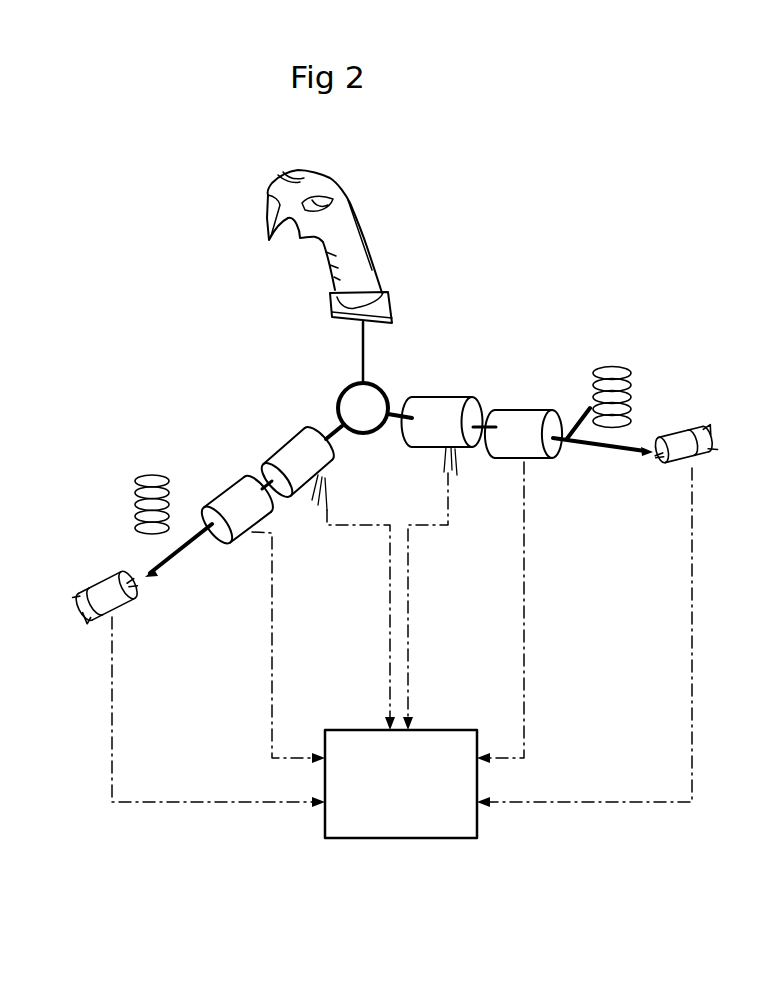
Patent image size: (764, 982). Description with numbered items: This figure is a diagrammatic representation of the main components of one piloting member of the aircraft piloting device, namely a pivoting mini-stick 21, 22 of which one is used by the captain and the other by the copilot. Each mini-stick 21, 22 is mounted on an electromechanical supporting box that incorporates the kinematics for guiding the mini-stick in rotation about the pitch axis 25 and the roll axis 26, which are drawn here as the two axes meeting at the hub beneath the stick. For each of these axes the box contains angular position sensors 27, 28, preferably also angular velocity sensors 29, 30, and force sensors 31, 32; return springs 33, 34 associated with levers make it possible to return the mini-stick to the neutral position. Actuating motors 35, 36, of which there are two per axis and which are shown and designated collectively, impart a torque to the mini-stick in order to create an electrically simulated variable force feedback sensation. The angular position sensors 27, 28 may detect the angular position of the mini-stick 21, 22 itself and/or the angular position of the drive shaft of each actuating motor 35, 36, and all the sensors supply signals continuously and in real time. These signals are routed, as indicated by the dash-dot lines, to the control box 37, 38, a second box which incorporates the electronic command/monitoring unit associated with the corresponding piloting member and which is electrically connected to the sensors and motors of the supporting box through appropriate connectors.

The mini-stick 21 is at (363, 262).
The mini-stick 22 is at (360, 230).
The pitch axis 25 is at (258, 478).
The roll axis 26 is at (610, 450).
The angular position sensor 27 is at (86, 569).
The angular position sensor 28 is at (701, 400).
The angular velocity sensor 29 is at (103, 592).
The angular velocity sensor 30 is at (678, 433).
The force sensor 31 is at (278, 452).
The force sensor 32 is at (450, 408).
The return spring 33 is at (146, 474).
The return spring 34 is at (622, 373).
The actuating motors 35 is at (217, 508).
The actuating motors 36 is at (522, 420).
The control box 37 is at (442, 823).
The control box 38 is at (440, 827).